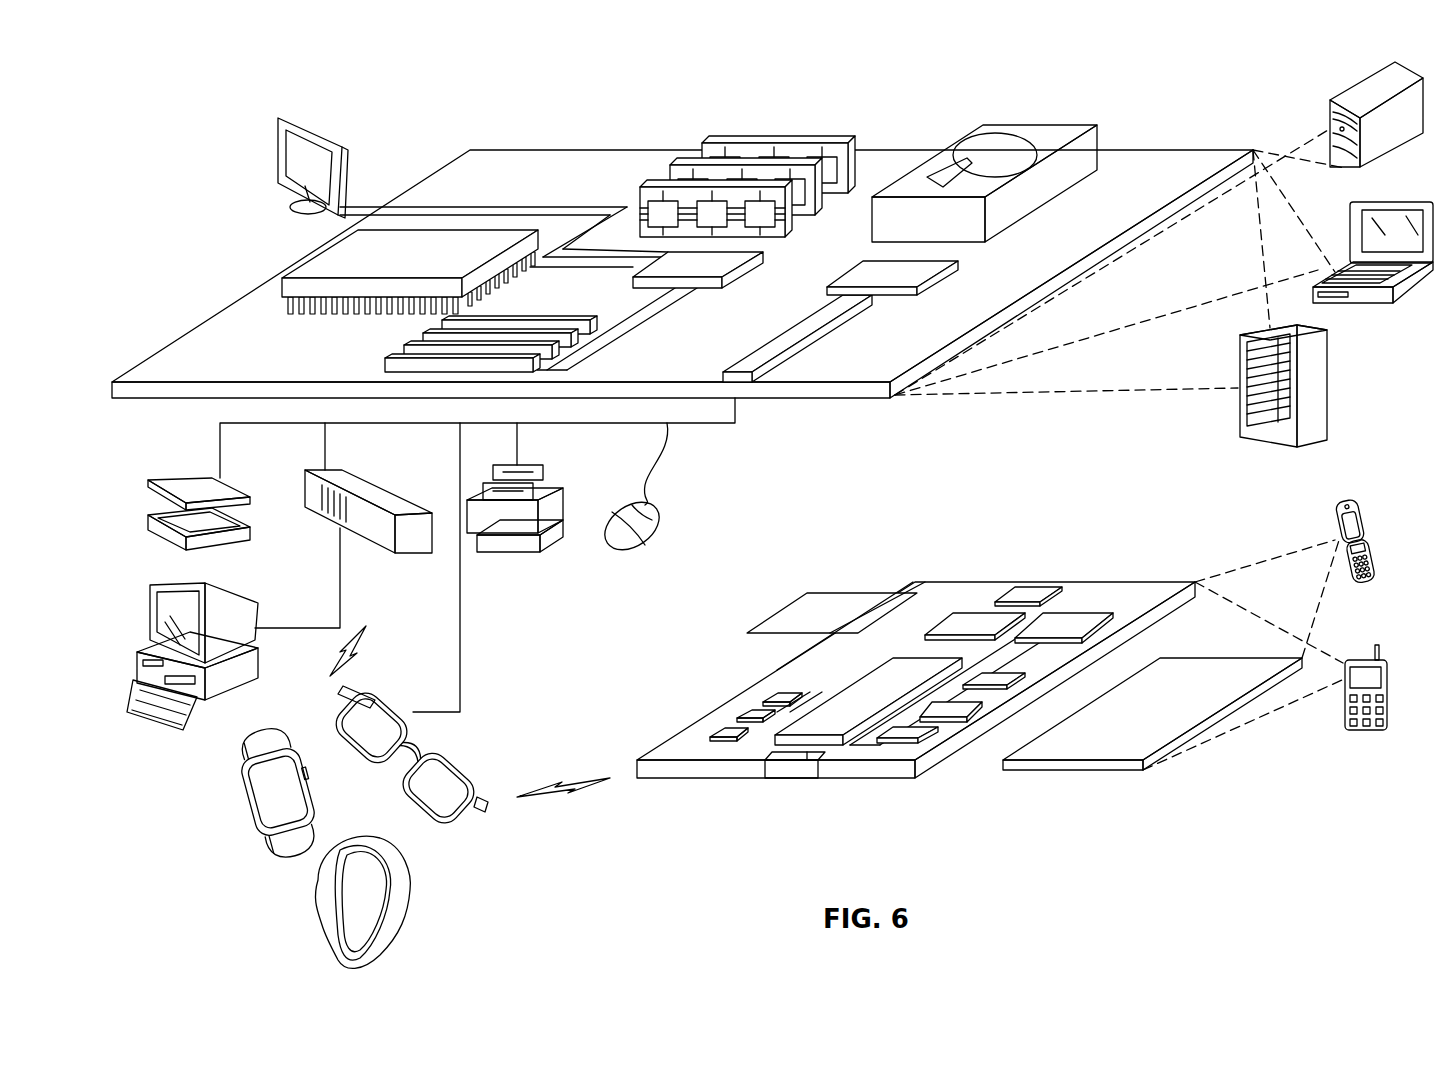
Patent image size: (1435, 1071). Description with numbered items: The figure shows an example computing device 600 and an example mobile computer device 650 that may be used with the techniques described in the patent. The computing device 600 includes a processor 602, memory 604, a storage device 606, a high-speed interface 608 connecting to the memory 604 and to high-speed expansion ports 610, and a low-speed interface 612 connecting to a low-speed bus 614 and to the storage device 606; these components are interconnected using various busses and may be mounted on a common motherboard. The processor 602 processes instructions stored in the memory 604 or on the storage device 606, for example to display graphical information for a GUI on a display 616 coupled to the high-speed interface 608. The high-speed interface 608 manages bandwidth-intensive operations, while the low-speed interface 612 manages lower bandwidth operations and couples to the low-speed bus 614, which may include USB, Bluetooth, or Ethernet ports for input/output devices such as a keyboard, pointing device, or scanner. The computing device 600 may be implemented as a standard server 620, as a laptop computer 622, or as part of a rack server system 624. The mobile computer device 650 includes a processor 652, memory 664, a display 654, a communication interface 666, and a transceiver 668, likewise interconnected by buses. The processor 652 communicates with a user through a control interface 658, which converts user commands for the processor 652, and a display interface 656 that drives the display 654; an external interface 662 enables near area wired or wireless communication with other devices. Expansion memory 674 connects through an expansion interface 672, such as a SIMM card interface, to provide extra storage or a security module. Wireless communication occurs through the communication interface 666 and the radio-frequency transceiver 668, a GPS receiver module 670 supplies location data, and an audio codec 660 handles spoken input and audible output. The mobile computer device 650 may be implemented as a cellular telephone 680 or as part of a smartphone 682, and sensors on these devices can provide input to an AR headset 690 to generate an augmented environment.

The computing device 600 is at (425, 95).
The processor 602 is at (307, 262).
The memory 604 is at (790, 150).
The storage device 606 is at (1030, 127).
The high-speed interface 608 is at (712, 263).
The high-speed expansion ports 610 is at (415, 345).
The low-speed interface 612 is at (865, 272).
The low-speed bus 614 is at (748, 370).
The display 616 is at (286, 118).
The standard server 620 is at (1355, 93).
The laptop computer 622 is at (1411, 202).
The rack server system 624 is at (1328, 385).
The mobile computer device 650 is at (685, 668).
The processor 652 is at (836, 712).
The display 654 is at (1195, 672).
The display interface 656 is at (925, 738).
The control interface 658 is at (960, 705).
The audio codec 660 is at (1000, 676).
The external interface 662 is at (793, 766).
The memory 664 is at (745, 716).
The communication interface 666 is at (975, 617).
The transceiver 668 is at (1070, 618).
The GPS receiver module 670 is at (1030, 592).
The expansion interface 672 is at (893, 597).
The expansion memory 674 is at (806, 597).
The cellular telephone 680 is at (1350, 498).
The smartphone 682 is at (1359, 658).
The AR headset 690 is at (466, 838).